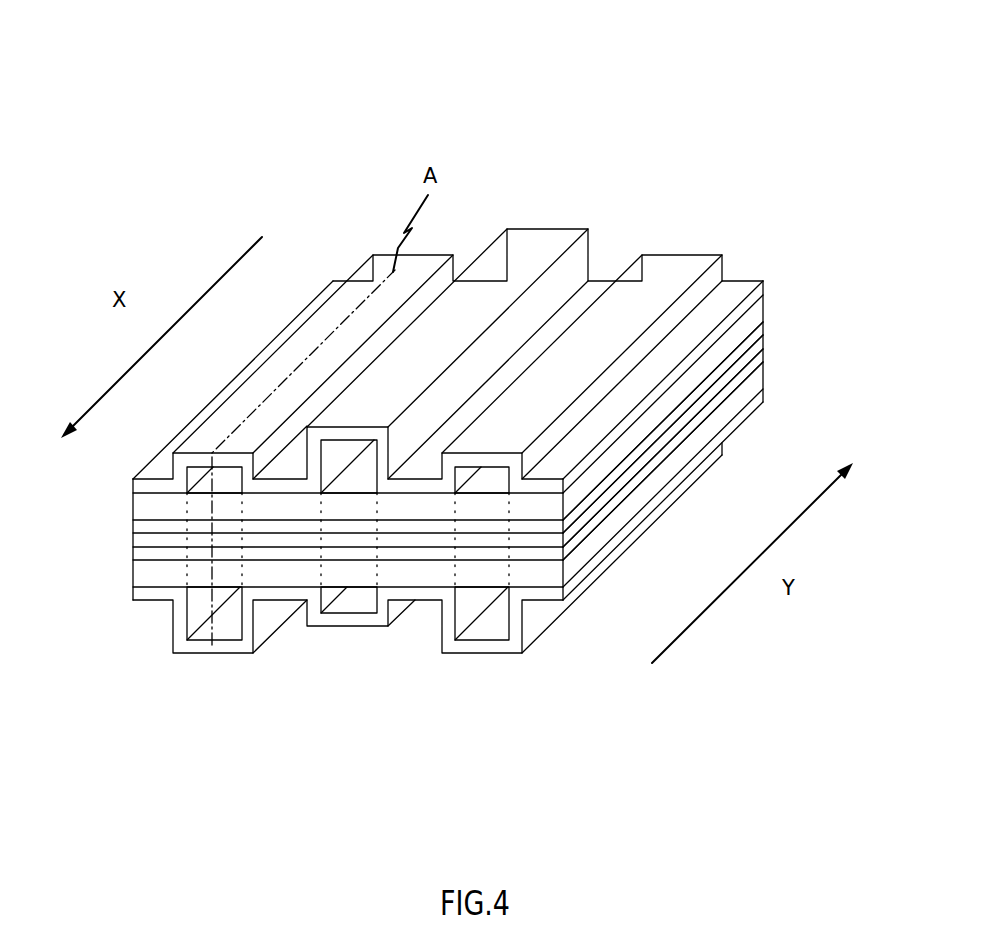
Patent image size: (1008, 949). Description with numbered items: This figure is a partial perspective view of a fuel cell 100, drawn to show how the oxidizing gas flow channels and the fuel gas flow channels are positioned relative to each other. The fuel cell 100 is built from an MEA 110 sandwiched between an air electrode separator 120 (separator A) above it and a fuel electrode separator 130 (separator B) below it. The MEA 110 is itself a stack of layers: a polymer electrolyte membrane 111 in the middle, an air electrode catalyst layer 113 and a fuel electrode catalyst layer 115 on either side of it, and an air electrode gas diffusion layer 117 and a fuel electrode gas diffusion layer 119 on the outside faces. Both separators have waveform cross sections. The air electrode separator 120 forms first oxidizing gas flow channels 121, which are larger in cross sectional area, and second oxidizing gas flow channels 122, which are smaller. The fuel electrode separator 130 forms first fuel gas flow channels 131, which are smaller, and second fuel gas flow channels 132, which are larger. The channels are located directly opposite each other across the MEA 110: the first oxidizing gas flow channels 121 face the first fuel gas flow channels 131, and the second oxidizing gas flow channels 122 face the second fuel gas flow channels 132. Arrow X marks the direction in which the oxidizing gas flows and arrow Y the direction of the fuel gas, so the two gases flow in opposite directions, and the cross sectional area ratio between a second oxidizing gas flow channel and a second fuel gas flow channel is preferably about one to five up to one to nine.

The fuel cell 100 is at (448, 301).
The MEA 110 is at (127, 495).
The polymer electrolyte membrane 111 is at (707, 426).
The air electrode catalyst layer 113 is at (710, 397).
The fuel electrode catalyst layer 115 is at (726, 454).
The air electrode gas diffusion layer 117 is at (687, 364).
The fuel electrode gas diffusion layer 119 is at (708, 474).
The air electrode separator 120 is at (448, 330).
The first oxidizing gas flow channels 121 is at (356, 337).
The second oxidizing gas flow channels 122 is at (342, 329).
The fuel electrode separator 130 is at (427, 558).
The first fuel gas flow channels 131 is at (349, 661).
The second fuel gas flow channels 132 is at (310, 662).